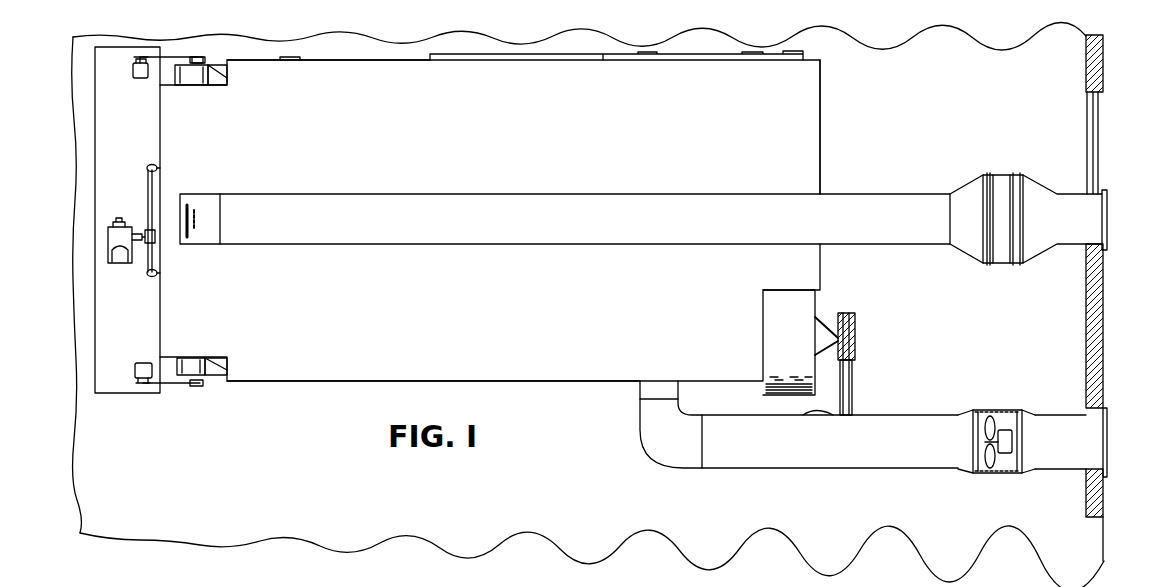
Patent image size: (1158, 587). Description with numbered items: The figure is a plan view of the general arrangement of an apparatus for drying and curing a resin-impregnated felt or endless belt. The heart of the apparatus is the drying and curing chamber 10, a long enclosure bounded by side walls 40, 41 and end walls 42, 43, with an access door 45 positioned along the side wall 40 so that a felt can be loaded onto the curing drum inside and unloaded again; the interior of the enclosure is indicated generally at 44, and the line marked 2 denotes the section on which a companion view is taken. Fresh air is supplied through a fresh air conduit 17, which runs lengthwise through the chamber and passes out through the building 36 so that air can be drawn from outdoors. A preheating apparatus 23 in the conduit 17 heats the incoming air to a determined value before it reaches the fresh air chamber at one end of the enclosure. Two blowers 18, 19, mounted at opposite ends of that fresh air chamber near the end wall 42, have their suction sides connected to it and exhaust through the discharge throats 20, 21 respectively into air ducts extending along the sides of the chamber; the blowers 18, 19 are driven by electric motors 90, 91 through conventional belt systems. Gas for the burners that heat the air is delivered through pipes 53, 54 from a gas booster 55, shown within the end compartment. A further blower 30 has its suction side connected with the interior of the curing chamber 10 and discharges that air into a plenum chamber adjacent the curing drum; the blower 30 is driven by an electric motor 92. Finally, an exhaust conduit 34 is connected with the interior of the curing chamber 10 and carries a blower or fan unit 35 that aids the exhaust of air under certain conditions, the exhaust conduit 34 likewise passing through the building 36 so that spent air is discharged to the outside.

The section line 2- 2 is at (93, 222).
The drying and curing chamber 10 is at (521, 366).
The fresh air conduit 17 is at (513, 193).
The blower 18 is at (193, 80).
The blower 19 is at (205, 372).
The discharge throat 20 is at (228, 74).
The discharge throat 21 is at (223, 370).
The preheating apparatus 23 is at (1000, 180).
The blower 30 is at (810, 312).
The exhaust conduit 34 is at (760, 466).
The blower or fan unit 35 is at (1005, 430).
The building 36 is at (1104, 335).
The side wall 40 is at (392, 58).
The side wall 41 is at (360, 382).
The end wall 42 is at (160, 135).
The end wall 43 is at (820, 172).
The housing chamber 44 is at (519, 317).
The access door 45 is at (692, 58).
The pipe 53 is at (148, 192).
The pipe 54 is at (142, 267).
The gas booster 55 is at (125, 263).
The electric motor 90 is at (142, 80).
The electric motor 91 is at (135, 364).
The electric motor 92 is at (810, 411).